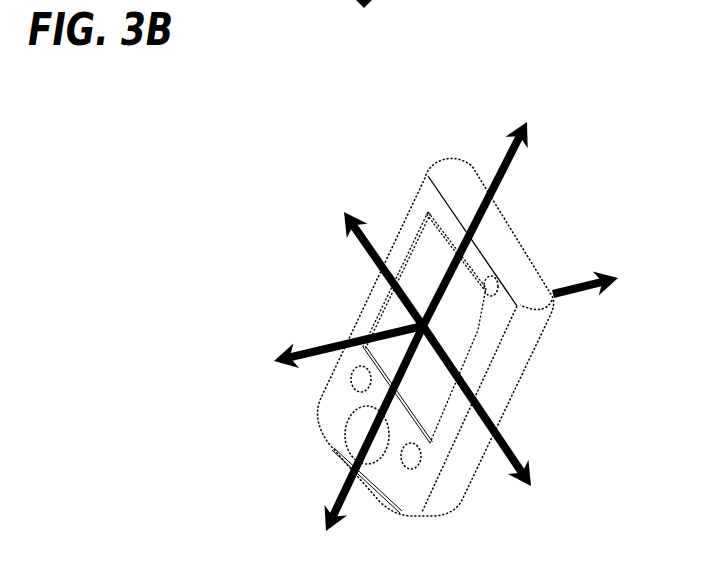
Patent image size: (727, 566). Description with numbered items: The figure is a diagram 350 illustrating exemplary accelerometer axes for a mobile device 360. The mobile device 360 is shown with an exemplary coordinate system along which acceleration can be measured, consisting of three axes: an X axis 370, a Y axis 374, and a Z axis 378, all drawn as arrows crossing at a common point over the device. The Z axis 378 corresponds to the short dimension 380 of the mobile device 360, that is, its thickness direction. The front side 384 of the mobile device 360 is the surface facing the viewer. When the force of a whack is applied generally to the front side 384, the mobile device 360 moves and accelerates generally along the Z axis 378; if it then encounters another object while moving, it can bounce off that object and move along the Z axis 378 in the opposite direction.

The diagram 350 is at (189, 160).
The mobile device 360 is at (531, 244).
The X axis 370 is at (528, 461).
The Y axis 374 is at (527, 123).
The Z axis 378 is at (608, 268).
The short dimension 380 is at (480, 386).
The front side 384 is at (371, 316).